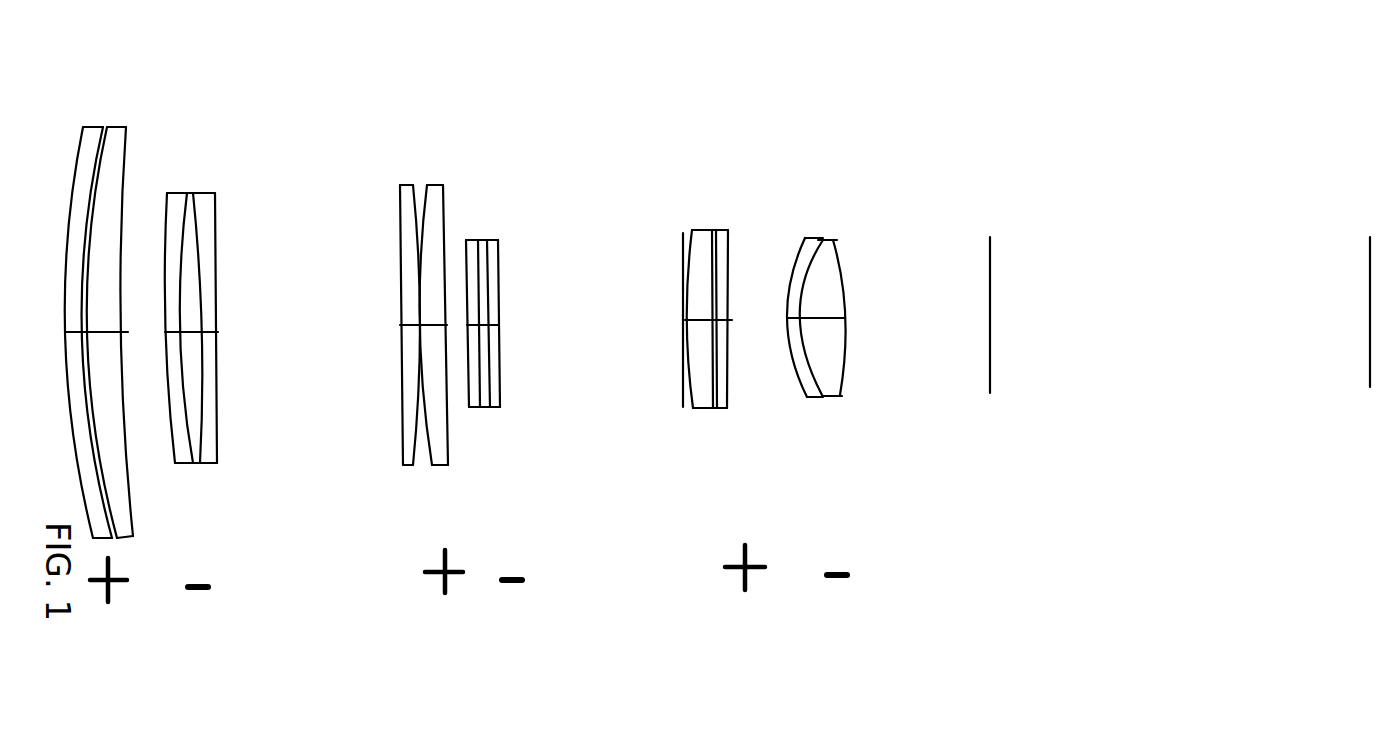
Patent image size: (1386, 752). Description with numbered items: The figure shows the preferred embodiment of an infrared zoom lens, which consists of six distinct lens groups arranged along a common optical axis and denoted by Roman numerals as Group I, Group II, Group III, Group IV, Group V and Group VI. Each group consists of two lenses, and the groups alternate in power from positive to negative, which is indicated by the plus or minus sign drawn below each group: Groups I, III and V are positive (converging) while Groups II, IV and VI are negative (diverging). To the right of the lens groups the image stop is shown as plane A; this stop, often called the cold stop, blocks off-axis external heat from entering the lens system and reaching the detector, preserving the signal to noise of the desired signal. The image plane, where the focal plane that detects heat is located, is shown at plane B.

The Group I is at (79, 90).
The Group II is at (218, 88).
The Group III is at (448, 95).
The Group IV is at (535, 95).
The Group V is at (672, 90).
The Group VI is at (782, 90).
The plane A is at (1000, 378).
The plane B is at (1370, 362).